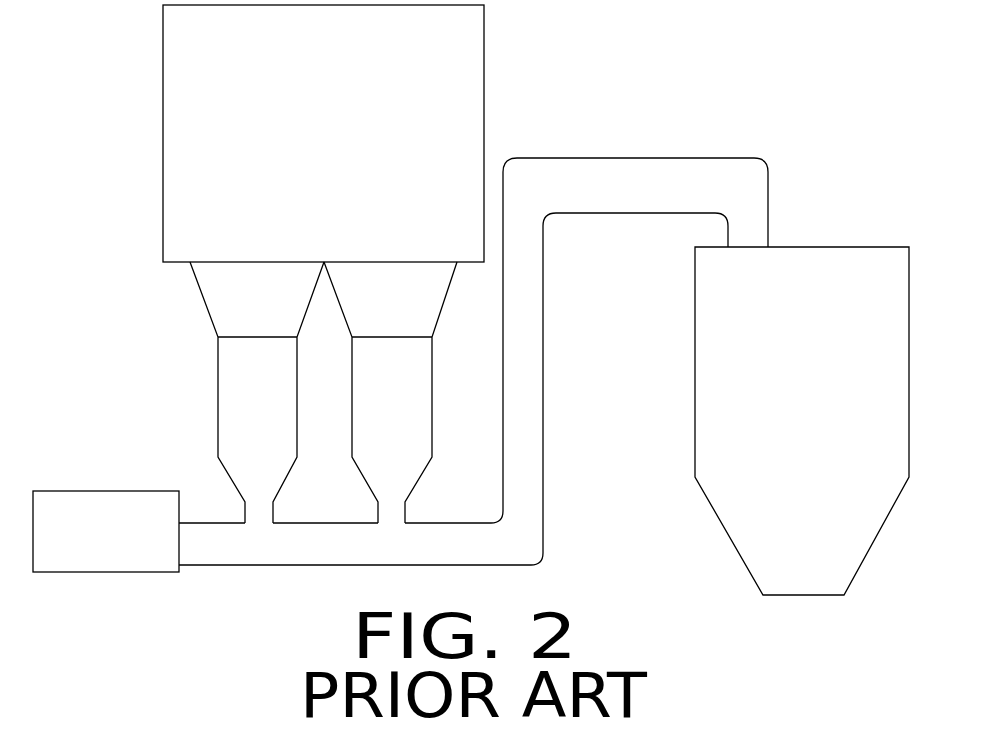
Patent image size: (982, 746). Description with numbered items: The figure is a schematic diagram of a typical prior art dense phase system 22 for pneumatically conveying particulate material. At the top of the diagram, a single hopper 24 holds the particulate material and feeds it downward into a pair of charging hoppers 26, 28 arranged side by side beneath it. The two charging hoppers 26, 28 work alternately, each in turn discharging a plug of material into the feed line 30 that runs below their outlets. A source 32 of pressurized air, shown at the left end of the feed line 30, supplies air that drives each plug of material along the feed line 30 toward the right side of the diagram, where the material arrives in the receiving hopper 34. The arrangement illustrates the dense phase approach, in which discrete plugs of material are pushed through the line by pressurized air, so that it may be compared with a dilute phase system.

The dense phase system 22 is at (373, 133).
The single hopper 24 is at (299, 135).
The charging hopper 26 is at (238, 410).
The charging hopper 28 is at (372, 410).
The feed line 30 is at (545, 508).
The source 32 is at (83, 544).
The receiving hopper 34 is at (785, 401).